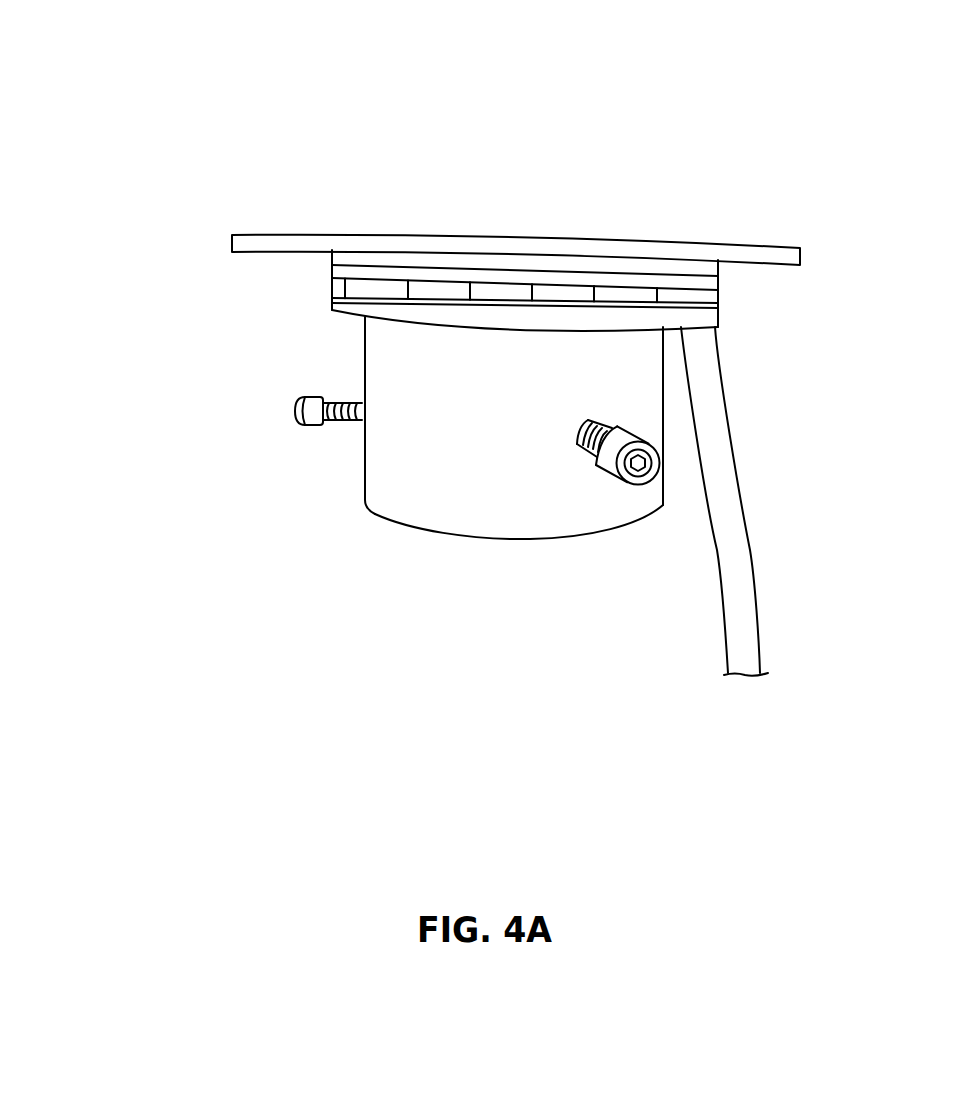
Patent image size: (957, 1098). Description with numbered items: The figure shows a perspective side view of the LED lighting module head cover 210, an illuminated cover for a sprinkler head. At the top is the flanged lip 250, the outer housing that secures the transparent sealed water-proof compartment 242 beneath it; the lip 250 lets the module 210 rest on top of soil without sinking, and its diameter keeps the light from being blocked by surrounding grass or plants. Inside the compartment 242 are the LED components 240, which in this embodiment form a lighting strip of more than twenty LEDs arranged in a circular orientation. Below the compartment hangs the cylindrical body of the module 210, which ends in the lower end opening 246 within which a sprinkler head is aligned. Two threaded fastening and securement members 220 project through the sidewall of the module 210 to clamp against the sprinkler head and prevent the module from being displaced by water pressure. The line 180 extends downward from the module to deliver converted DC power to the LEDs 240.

The LED lighting module head cover 210 is at (152, 278).
The flanged lip 250 is at (599, 241).
The LED components 240 is at (709, 295).
The transparent sealed water-proof compartment 242 is at (408, 273).
The lower end opening 246 is at (498, 557).
The threaded fastening and securement members 220 is at (295, 411).
The line 180 is at (725, 462).